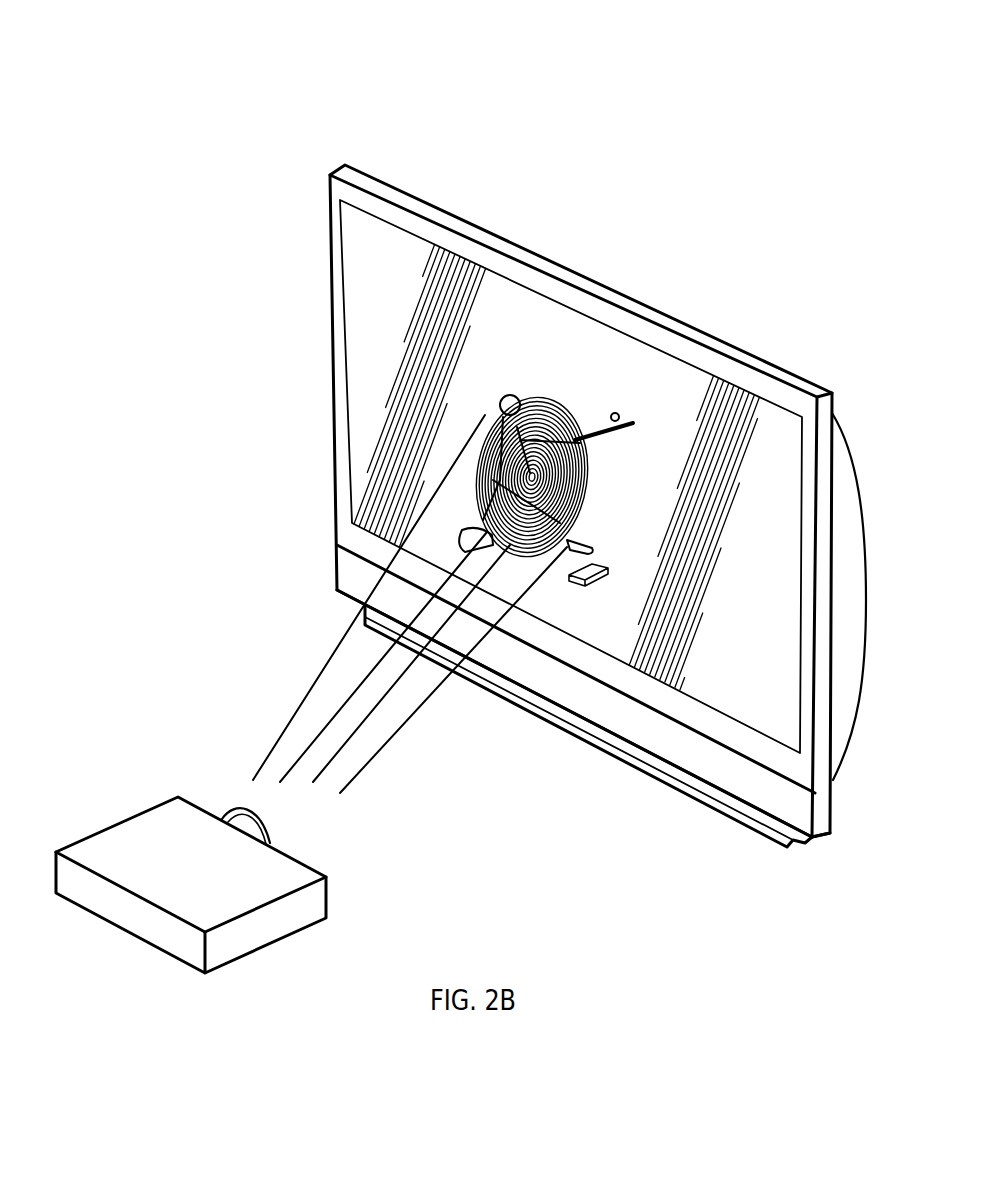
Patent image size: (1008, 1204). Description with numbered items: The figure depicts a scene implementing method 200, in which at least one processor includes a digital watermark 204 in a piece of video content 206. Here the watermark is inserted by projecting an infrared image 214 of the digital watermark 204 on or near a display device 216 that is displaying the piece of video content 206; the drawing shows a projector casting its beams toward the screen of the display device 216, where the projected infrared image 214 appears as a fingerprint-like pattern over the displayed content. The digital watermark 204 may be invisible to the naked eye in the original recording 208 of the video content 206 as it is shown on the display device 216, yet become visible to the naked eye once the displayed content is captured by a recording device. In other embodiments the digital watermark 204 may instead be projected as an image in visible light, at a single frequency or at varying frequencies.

The method 200 is at (507, 99).
The digital watermark 204 is at (584, 386).
The piece of video content 206 is at (571, 455).
The original recording 208 is at (503, 290).
The infrared image 214 is at (514, 395).
The display device 216 is at (758, 358).